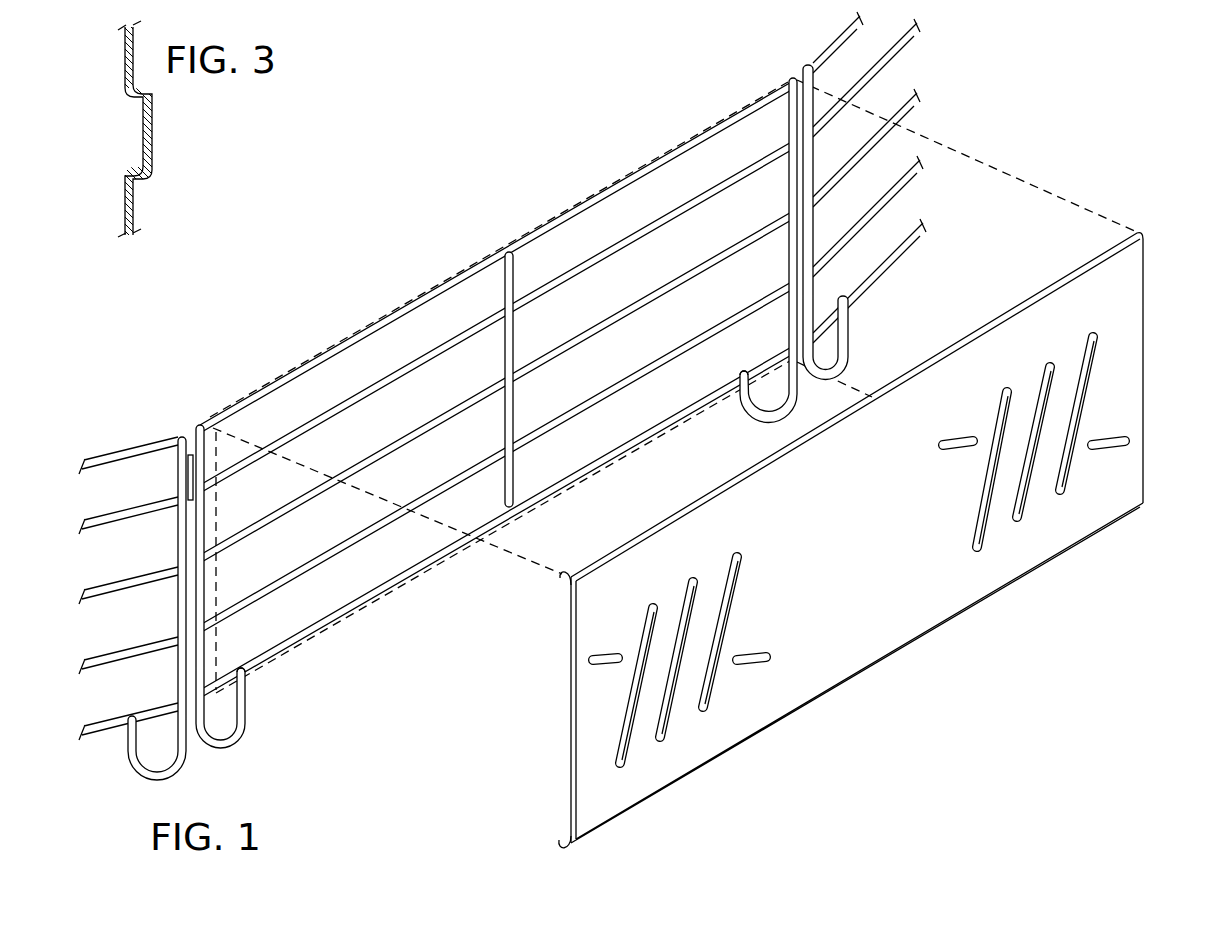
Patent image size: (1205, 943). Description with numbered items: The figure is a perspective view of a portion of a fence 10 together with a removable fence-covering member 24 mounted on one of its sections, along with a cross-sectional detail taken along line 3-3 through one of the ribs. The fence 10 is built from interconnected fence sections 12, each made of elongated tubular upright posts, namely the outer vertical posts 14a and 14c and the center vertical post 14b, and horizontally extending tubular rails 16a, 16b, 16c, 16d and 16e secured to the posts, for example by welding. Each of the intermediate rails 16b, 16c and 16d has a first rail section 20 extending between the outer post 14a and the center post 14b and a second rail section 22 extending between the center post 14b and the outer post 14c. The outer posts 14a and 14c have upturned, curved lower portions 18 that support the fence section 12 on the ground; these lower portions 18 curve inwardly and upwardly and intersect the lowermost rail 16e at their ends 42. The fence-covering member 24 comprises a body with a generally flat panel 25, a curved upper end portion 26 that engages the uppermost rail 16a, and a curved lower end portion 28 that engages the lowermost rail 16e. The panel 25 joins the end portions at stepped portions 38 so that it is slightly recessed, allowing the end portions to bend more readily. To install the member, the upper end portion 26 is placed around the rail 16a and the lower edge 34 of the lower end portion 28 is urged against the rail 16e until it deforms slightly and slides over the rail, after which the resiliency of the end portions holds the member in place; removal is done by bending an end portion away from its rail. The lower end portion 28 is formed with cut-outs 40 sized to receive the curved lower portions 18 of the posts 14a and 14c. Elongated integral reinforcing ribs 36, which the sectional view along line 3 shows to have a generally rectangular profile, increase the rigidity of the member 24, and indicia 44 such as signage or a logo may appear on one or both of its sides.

In FIG. 1, the fence 10 is at (575, 160).
In FIG. 1, the fence section 12 is at (100, 448).
In FIG. 1, the vertical post 14a is at (195, 445).
In FIG. 1, the vertical post 14b is at (512, 250).
In FIG. 1, the vertical post 14c is at (788, 125).
In FIG. 1, the rail 16a is at (455, 280).
In FIG. 1, the rail 16b is at (392, 372).
In FIG. 1, the rail 16c is at (392, 443).
In FIG. 1, the rail 16d is at (392, 505).
In FIG. 1, the rail 16e is at (373, 598).
In FIG. 1, the lower portion 18 is at (248, 712).
In FIG. 1, the first rail section 20 is at (292, 445).
In FIG. 1, the second rail section 22 is at (628, 232).
In FIG. 1, the fence-covering member 24 is at (1150, 384).
In FIG. 1, the panel 25 is at (1127, 407).
In FIG. 1, the upper end portion 26 is at (621, 540).
In FIG. 1, the lower end portion 28 is at (560, 847).
In FIG. 1, the lower edge 34 is at (567, 822).
In FIG. 3, the reinforcing rib 36 is at (152, 123).
In FIG. 1, the reinforcing rib 36 is at (596, 659).
In FIG. 1, the stepped portion 38 is at (574, 568).
In FIG. 1, the cut-out 40 is at (614, 822).
In FIG. 1, the end 42 is at (244, 672).
In FIG. 1, the indicia 44 is at (849, 498).
In FIG. 1, the section line 3- 3 is at (630, 634).